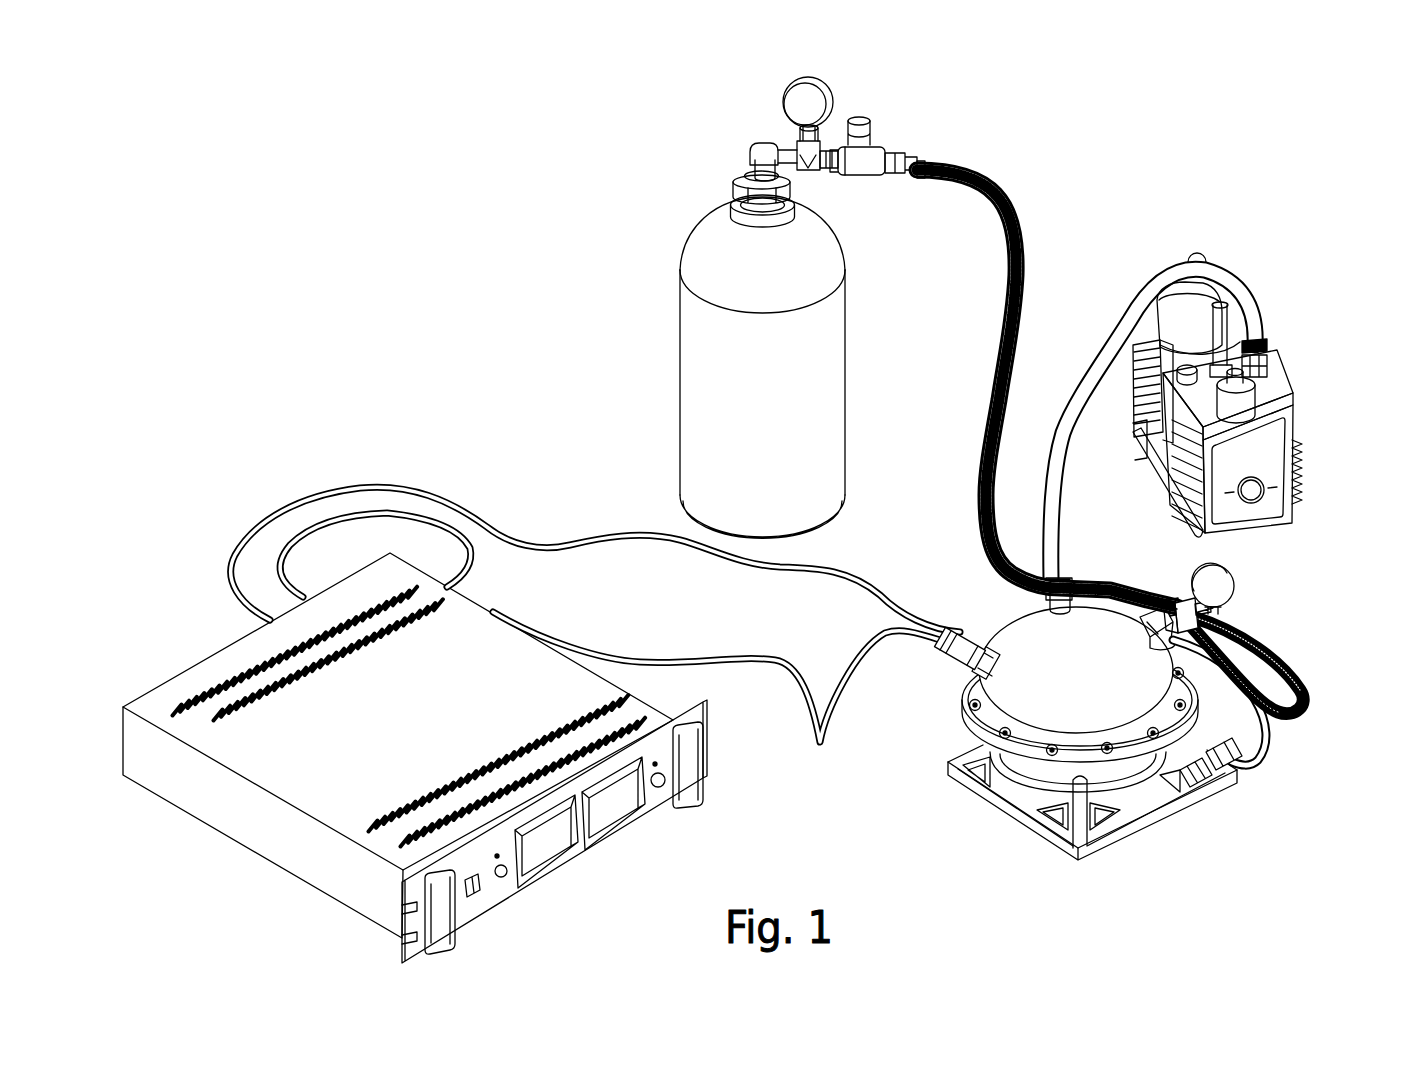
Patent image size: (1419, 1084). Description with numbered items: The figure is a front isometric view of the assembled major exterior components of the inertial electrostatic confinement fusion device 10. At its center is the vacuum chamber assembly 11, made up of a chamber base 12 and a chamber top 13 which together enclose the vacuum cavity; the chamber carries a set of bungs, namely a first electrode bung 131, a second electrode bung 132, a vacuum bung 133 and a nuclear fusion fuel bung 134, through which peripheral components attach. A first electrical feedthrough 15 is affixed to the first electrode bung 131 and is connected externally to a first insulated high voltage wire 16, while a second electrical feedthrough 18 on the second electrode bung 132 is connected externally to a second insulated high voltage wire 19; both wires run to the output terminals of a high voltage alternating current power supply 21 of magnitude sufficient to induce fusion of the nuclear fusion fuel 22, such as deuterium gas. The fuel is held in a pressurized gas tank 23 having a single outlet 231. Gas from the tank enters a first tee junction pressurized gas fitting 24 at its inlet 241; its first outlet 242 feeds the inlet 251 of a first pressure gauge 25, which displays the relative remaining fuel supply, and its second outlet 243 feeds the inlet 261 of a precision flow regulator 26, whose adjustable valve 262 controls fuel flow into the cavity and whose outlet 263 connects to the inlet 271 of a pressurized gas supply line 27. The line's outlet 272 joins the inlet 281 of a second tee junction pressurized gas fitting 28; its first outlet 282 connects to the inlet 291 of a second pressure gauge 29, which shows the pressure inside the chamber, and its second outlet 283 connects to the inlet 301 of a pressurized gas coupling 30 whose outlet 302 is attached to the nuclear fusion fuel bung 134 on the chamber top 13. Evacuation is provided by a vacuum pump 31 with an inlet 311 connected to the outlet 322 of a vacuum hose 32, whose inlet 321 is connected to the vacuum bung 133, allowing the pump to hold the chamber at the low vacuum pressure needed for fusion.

The inertial electrostatic confinement fusion device 10 is at (1068, 745).
The vacuum chamber assembly 11 is at (1055, 823).
The chamber base 12 is at (1013, 783).
The chamber top 13 is at (1068, 687).
The first electrode bung 131 is at (972, 672).
The second electrode bung 132 is at (1200, 787).
The vacuum bung 133 is at (1040, 598).
The nuclear fusion fuel bung 134 is at (1135, 612).
The first electrical feedthrough 15 is at (958, 625).
The first insulated high voltage wire 16 is at (862, 629).
The second electrical feedthrough 18 is at (1230, 768).
The second insulated high voltage wire 19 is at (1272, 745).
The high voltage alternating current power supply 21 is at (205, 655).
The nuclear fusion fuel 22 is at (738, 395).
The pressurized gas tank 23 is at (678, 354).
The single outlet 231 is at (742, 210).
The first tee junction pressurized gas fitting 24 is at (815, 165).
The inlet 241 is at (775, 170).
The first outlet 242 is at (822, 147).
The second outlet 243 is at (828, 170).
The first pressure gauge 25 is at (742, 90).
The inlet 251 is at (800, 126).
The precision flow regulator 26 is at (913, 163).
The inlet 261 is at (862, 178).
The adjustable valve 262 is at (868, 120).
The outlet 263 is at (896, 175).
The pressurized gas supply line 27 is at (1130, 375).
The inlet 271 is at (926, 162).
The outlet 272 is at (1225, 617).
The second tee junction pressurized gas fitting 28 is at (1220, 559).
The inlet 281 is at (1215, 655).
The first outlet 282 is at (1225, 608).
The second outlet 283 is at (1160, 600).
The second pressure gauge 29 is at (1232, 556).
The inlet 291 is at (1208, 598).
The pressurized gas coupling 30 is at (1227, 621).
The inlet 301 is at (1285, 663).
The outlet 302 is at (1294, 694).
The vacuum pump 31 is at (1252, 409).
The inlet 311 is at (1268, 350).
The vacuum hose 32 is at (1154, 404).
The inlet 321 is at (1049, 571).
The outlet 322 is at (1258, 330).